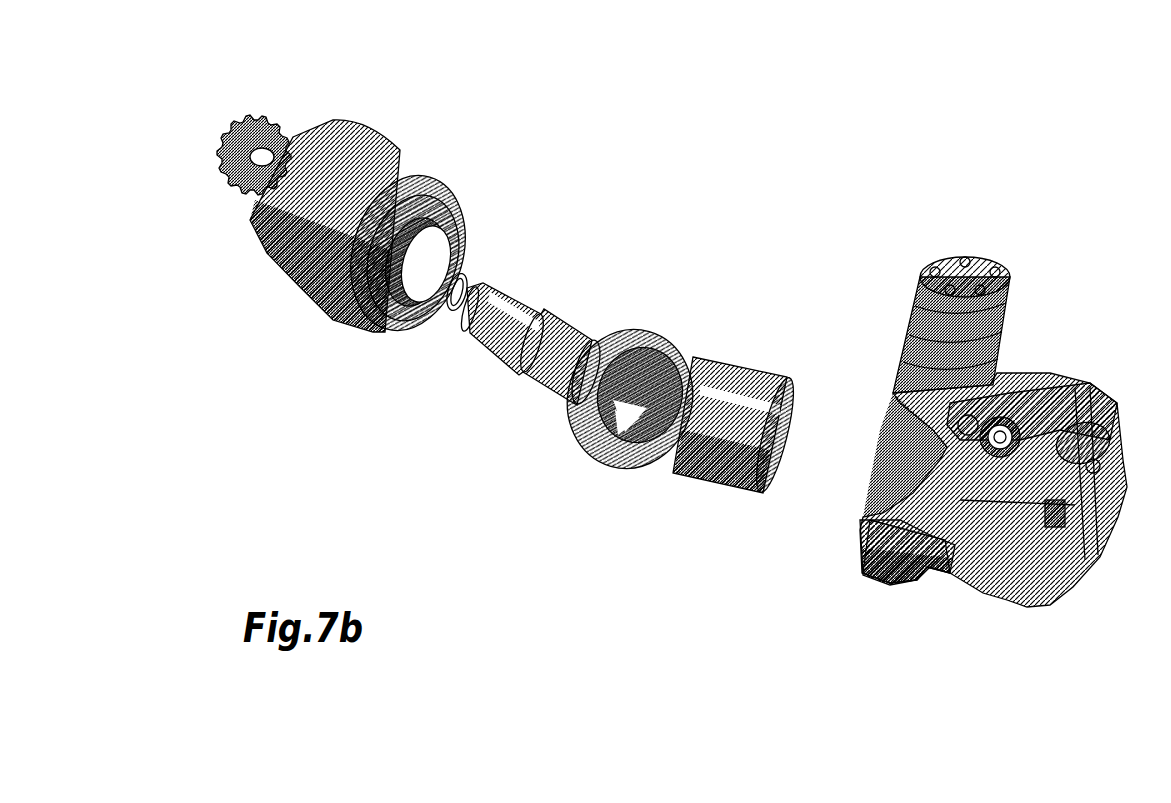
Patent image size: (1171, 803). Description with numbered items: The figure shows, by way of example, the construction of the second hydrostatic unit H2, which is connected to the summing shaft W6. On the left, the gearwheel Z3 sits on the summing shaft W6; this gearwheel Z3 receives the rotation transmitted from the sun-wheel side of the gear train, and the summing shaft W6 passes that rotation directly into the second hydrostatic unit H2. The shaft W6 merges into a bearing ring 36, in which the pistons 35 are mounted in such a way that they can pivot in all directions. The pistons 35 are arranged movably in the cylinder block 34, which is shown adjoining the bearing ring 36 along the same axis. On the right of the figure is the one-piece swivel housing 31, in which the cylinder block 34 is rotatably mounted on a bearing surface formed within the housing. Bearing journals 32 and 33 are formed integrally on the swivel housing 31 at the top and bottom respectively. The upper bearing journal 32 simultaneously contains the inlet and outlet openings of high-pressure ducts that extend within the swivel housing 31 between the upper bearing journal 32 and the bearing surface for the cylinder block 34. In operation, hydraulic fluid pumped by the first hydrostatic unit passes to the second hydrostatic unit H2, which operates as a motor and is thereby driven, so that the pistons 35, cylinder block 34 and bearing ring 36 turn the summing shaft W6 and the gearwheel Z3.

The gearwheel Z3 is at (332, 120).
The summing shaft W6 is at (503, 340).
The bearing ring 36 is at (573, 433).
The pistons 35 is at (638, 430).
The cylinder block 34 is at (743, 473).
The second hydrostatic unit H2 is at (768, 187).
The swivel housing 31 is at (1095, 552).
The upper bearing journal 32 is at (1000, 305).
The lower bearing journal 33 is at (897, 582).